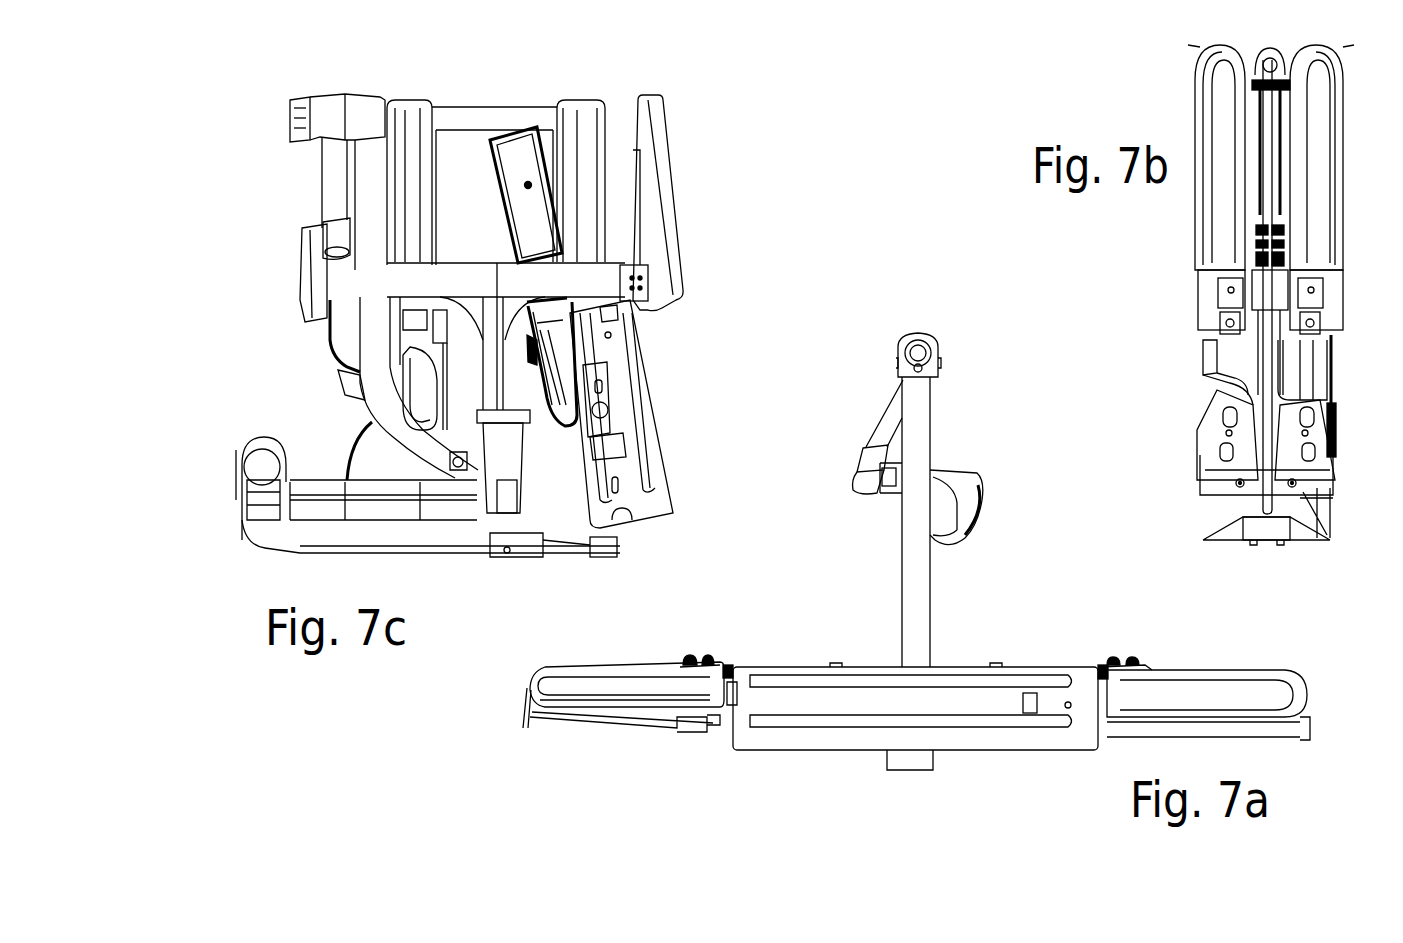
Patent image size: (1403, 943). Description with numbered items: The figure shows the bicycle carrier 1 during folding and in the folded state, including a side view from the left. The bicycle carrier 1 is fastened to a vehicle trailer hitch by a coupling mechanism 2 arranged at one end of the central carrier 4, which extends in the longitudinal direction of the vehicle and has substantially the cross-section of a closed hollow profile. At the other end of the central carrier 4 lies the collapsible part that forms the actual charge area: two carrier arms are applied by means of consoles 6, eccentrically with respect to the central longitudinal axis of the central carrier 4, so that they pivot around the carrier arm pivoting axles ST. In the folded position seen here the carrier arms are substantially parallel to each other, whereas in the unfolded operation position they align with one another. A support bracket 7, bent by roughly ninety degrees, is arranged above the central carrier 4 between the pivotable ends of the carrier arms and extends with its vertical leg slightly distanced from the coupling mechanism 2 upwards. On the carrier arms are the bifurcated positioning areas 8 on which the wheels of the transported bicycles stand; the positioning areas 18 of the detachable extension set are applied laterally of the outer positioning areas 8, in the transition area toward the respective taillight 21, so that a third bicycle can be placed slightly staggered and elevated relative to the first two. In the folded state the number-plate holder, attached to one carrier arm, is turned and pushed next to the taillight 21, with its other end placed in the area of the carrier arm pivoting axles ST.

In FIG. 7C, the bicycle carrier 1 is at (508, 490).
In FIG. 7C, the coupling mechanism 2 is at (240, 449).
In FIG. 7B, the central carrier 4 is at (1270, 518).
In FIG. 7B, the console 6 is at (1203, 440).
In FIG. 7C, the support bracket 7 is at (378, 296).
In FIG. 7C, the positioning area 8 is at (412, 125).
In FIG. 7C, the positioning area of the extension set 18 is at (522, 172).
In FIG. 7A, the positioning area of the extension set 18 is at (712, 652).
In FIG. 7C, the taillight 21 is at (658, 162).
In FIG. 7B, the carrier arm pivoting axle ST is at (1238, 486).